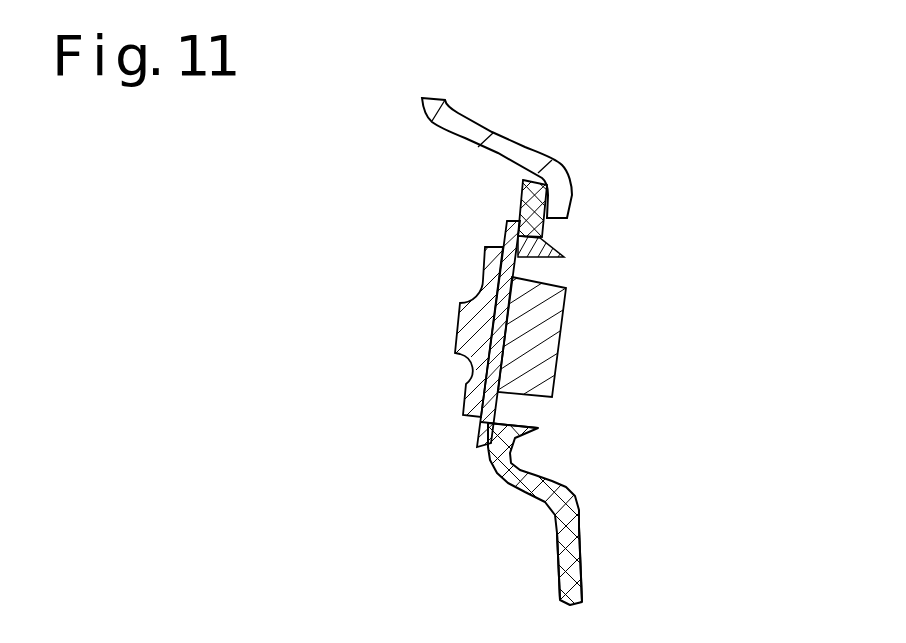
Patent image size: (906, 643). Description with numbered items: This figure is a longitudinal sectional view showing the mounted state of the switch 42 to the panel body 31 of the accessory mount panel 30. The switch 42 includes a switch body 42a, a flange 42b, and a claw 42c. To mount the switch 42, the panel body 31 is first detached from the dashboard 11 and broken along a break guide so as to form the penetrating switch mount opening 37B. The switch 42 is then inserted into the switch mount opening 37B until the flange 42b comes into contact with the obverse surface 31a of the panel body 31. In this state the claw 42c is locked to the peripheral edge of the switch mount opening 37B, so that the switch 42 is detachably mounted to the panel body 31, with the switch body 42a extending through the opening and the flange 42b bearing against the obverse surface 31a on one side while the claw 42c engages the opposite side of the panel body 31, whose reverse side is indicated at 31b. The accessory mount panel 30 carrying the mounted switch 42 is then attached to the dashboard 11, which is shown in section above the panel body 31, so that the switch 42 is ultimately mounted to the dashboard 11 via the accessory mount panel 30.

The dashboard 11 is at (560, 170).
The switch mount opening 37B is at (533, 250).
The switch 42 is at (307, 413).
The switch body 42a is at (455, 335).
The flange 42b is at (487, 401).
The claw 42c is at (518, 243).
The panel body 31 is at (573, 498).
The accessory mount panel 30 is at (584, 522).
The obverse surface 31a is at (557, 582).
The right face of plate leg 31b is at (583, 583).